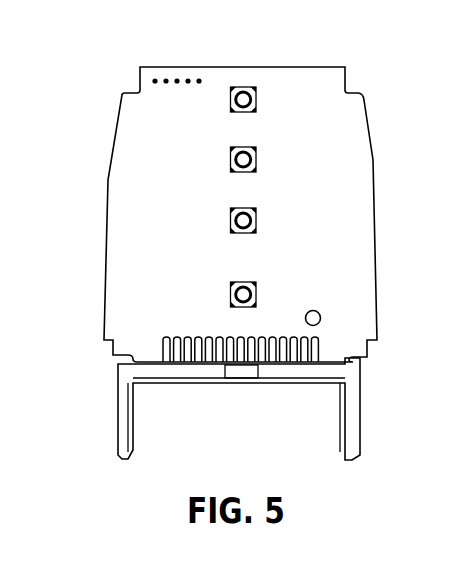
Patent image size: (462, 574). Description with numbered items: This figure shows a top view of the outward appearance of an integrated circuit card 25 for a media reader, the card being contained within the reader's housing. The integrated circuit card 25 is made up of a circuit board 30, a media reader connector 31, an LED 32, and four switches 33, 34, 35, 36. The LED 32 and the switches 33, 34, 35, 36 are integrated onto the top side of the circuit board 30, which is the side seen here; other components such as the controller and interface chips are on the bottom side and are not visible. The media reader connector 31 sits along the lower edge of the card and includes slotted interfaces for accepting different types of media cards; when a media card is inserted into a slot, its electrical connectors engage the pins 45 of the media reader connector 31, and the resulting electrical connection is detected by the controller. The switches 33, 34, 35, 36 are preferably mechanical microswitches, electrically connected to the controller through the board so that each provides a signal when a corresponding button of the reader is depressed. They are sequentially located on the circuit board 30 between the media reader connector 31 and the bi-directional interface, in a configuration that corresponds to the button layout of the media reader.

The integrated circuit card 25 is at (88, 112).
The circuit board 30 is at (377, 257).
The media reader connector 31 is at (360, 413).
The LED 32 is at (321, 317).
The switch 33 is at (257, 97).
The switch 34 is at (257, 158).
The switch 35 is at (257, 220).
The switch 36 is at (257, 292).
The pins 45 is at (209, 363).